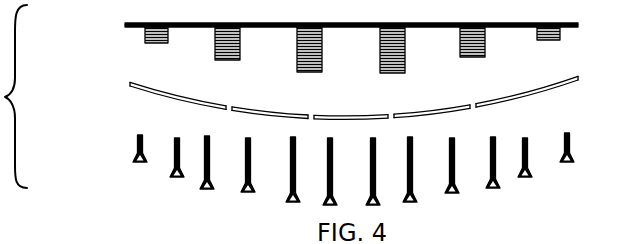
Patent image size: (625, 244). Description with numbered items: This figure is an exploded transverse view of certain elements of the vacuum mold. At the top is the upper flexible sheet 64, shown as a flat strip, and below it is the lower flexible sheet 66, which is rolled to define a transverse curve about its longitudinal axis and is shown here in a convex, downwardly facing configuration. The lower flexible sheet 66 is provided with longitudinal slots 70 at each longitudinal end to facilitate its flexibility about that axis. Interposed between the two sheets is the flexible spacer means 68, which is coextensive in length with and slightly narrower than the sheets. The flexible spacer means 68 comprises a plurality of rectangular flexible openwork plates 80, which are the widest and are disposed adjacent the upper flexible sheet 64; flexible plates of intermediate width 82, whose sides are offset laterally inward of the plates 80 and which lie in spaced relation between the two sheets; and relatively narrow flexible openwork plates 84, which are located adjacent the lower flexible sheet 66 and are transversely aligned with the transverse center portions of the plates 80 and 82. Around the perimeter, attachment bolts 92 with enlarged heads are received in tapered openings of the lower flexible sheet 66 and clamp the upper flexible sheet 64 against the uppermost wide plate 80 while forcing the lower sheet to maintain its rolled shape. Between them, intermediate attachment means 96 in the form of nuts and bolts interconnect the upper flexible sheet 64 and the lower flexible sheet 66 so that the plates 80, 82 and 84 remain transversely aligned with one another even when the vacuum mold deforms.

The upper flexible sheet 64 is at (160, 23).
The lower flexible sheet 66 is at (342, 115).
The flexible spacer means 68 is at (135, 38).
The longitudinal slots 70 is at (470, 106).
The flexible openwork plates 80 is at (168, 43).
The flexible plates of intermediate width 82 is at (240, 52).
The narrow flexible openwork plates 84 is at (380, 70).
The perimeter attachment bolts 92 is at (137, 144).
The intermediate attachment means 96 is at (291, 157).